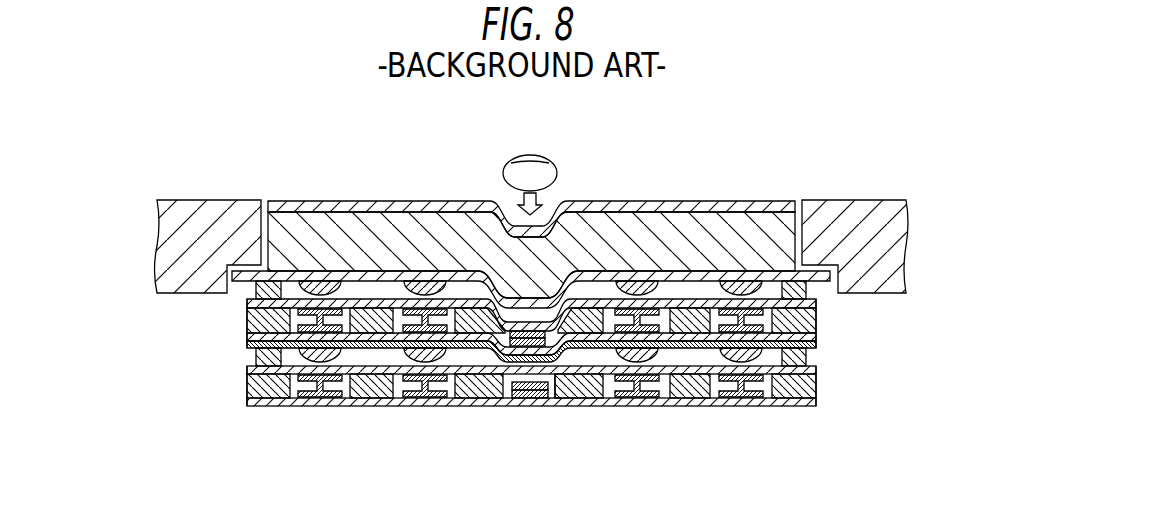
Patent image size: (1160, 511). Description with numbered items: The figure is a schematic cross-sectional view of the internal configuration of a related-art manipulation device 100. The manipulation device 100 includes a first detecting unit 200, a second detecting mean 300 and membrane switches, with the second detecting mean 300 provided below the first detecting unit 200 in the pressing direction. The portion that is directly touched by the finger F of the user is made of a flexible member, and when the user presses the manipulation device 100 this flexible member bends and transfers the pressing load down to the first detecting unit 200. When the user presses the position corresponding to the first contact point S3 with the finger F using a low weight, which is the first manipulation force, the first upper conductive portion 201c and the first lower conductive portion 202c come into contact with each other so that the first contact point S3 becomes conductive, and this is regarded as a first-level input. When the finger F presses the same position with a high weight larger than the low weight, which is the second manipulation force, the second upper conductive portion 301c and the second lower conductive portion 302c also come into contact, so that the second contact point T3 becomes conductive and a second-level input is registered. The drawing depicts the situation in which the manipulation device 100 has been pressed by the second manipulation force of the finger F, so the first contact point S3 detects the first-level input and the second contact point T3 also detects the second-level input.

The manipulation device 100 is at (416, 188).
The first detecting unit 200 is at (235, 299).
The second detecting mean 300 is at (235, 366).
The first upper conductive portion 201c is at (503, 331).
The first lower conductive portion 202c is at (505, 346).
The second upper conductive portion 301c is at (518, 398).
The second lower conductive portion 302c is at (548, 391).
The first contact point S3 is at (553, 328).
The second contact point T3 is at (558, 389).
The finger F is at (550, 162).